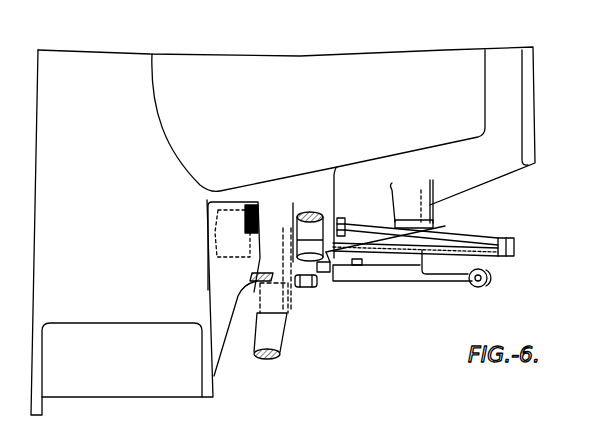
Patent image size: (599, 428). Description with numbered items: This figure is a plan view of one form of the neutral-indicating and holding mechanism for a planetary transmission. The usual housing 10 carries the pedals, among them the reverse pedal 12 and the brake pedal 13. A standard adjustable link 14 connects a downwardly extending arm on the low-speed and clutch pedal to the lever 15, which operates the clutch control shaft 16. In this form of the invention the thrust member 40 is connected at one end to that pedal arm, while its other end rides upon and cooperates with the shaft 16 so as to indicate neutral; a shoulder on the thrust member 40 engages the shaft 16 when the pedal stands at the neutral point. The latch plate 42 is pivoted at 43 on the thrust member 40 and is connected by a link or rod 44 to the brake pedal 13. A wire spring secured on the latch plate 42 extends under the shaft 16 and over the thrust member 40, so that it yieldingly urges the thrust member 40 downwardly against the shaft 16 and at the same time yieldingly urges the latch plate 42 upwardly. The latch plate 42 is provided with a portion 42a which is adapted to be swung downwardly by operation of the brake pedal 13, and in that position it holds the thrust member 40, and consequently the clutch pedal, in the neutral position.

The housing 10 is at (108, 390).
The reverse pedal 12 is at (258, 280).
The brake pedal 13 is at (312, 212).
The adjustable link 14 is at (298, 283).
The lever 15 is at (452, 280).
The clutch control shaft 16 is at (423, 229).
The thrust member 40 is at (320, 263).
The latch plate 42 is at (478, 244).
The portion of latch plate 42a is at (445, 263).
The pivot 43 is at (497, 260).
The link or rod 44 is at (362, 232).